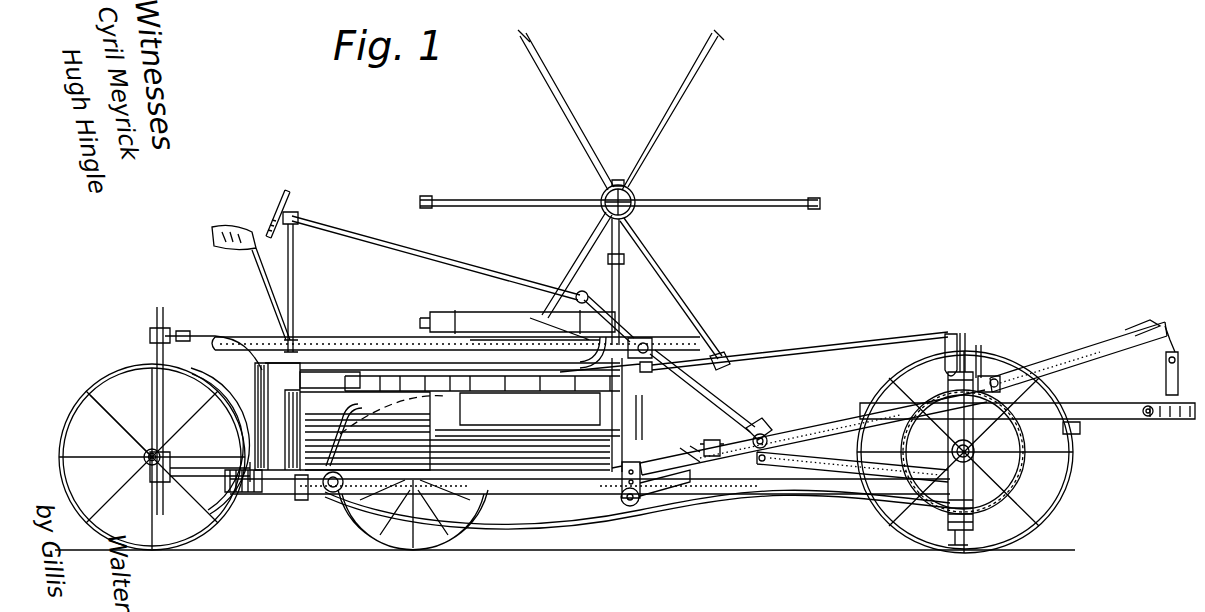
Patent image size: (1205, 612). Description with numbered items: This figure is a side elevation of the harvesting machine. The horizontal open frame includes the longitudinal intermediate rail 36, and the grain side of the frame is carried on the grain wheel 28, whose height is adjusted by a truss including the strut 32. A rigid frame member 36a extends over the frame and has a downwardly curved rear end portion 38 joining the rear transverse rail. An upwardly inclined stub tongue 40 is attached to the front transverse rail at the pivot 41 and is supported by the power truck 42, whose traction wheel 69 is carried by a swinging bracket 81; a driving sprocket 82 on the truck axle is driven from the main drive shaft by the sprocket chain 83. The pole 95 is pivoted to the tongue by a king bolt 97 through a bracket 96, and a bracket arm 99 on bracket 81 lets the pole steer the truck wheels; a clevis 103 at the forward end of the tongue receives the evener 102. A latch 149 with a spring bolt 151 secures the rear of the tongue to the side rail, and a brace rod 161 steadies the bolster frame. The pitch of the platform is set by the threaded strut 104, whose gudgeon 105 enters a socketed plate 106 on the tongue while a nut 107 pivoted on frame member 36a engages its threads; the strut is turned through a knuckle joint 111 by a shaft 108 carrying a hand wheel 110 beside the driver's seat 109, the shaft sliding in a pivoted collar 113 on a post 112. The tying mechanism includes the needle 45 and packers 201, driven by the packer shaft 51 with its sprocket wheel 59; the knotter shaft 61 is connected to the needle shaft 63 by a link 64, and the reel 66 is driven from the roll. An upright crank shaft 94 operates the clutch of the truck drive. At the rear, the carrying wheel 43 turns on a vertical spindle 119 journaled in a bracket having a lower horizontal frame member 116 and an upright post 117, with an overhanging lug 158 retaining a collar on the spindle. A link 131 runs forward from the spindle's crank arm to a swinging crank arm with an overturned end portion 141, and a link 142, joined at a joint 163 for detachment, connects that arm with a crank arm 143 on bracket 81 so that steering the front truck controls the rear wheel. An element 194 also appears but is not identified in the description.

The grain wheel 28 is at (400, 550).
The strut 32 is at (294, 414).
The intermediate rail 36 is at (510, 495).
The frame member 36a is at (350, 340).
The downwardly curved rear end portion 38 is at (232, 400).
The stub tongue 40 is at (1055, 366).
The pivot 41 is at (628, 480).
The power truck 42 is at (1110, 420).
The rear carrying wheel 43 is at (140, 378).
The needle 45 is at (500, 420).
The packer shaft 51 is at (388, 450).
The sprocket wheel 59 is at (302, 500).
The knotter shaft 61 is at (486, 316).
The needle shaft 63 is at (620, 440).
The link 64 is at (642, 442).
The reel 66 is at (662, 132).
The traction wheel 69 is at (1064, 485).
The swinging bracket 81 is at (1000, 512).
The driving sprocket 82 is at (1015, 470).
The sprocket chain 83 is at (600, 525).
The crank shaft 94 is at (334, 413).
The pole 95 is at (1150, 418).
The bracket 96 is at (998, 378).
The king bolt 97 is at (990, 345).
The bracket arm 99 is at (1064, 443).
The evener 102 is at (1170, 385).
The clevis 103 is at (1144, 330).
The threaded strut 104 is at (734, 418).
The gudgeon 105 is at (760, 432).
The socketed plate 106 is at (810, 440).
The nut 107 is at (660, 340).
The shaft 108 is at (486, 268).
The driver's seat 109 is at (232, 230).
The hand wheel 110 is at (300, 192).
The knuckle joint 111 is at (580, 290).
The post 112 is at (296, 296).
The collar 113 is at (302, 218).
The lower horizontal frame member 116 is at (240, 490).
The upright post 117 is at (230, 486).
The vertical spindle 119 is at (152, 350).
The link 131 is at (228, 352).
The overturned end portion 141 is at (352, 387).
The link 142 is at (870, 352).
The crank arm 143 is at (954, 340).
The latch 149 is at (710, 448).
The spring bolt 151 is at (692, 460).
The overhanging lug 158 is at (128, 412).
The brace rod 161 is at (824, 488).
The joint 163 is at (700, 318).
The turnbuckle rod 194 is at (196, 340).
The packers 201 is at (440, 415).